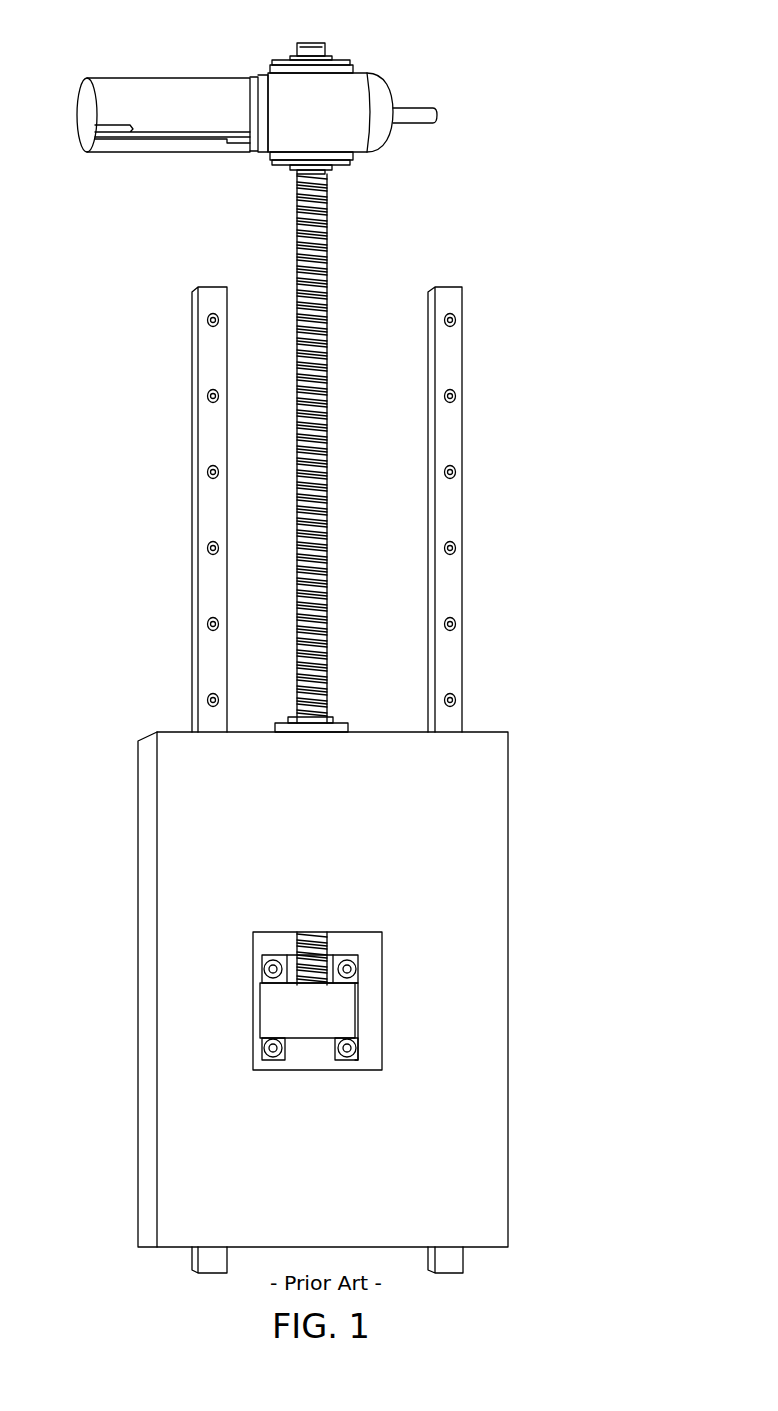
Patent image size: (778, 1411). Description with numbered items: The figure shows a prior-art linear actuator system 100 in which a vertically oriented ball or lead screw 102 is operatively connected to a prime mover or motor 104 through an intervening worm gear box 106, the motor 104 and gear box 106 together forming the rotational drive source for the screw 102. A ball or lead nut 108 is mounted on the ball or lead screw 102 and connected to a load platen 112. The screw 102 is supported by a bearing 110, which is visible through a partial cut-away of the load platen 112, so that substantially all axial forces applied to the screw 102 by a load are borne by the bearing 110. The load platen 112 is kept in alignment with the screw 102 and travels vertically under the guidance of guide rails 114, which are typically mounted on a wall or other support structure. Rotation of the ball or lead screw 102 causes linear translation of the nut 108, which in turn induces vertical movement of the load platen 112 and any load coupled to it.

The linear actuator system 100 is at (126, 405).
The ball or lead screw 102 is at (327, 202).
The motor 104 is at (168, 78).
The worm gear box 106 is at (367, 110).
The ball or lead nut 108 is at (281, 722).
The bearing 110 is at (267, 1018).
The load platen 112 is at (502, 863).
The guide rails 114 is at (457, 508).